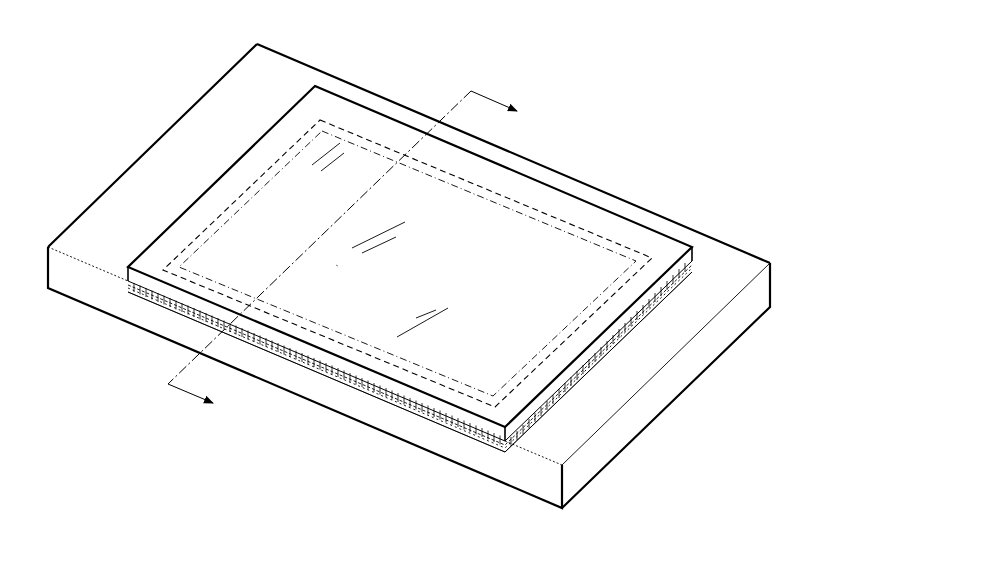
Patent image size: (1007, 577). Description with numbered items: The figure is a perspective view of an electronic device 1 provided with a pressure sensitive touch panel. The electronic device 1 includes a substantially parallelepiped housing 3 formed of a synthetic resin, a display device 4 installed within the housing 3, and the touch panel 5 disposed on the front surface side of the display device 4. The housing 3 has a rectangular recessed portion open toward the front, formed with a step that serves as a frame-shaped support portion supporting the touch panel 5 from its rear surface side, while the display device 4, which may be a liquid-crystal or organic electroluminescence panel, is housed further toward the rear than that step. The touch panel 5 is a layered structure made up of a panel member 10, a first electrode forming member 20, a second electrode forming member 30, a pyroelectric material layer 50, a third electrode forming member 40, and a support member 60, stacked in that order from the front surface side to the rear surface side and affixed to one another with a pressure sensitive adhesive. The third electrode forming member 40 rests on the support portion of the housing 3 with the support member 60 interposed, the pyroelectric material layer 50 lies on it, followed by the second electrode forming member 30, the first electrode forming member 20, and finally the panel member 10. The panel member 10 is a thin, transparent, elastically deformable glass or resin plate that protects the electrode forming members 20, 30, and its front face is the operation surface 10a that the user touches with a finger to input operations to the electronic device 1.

The electronic device 1 is at (118, 110).
The housing 3 is at (286, 65).
The display device 4 is at (597, 233).
The touch panel 5 is at (664, 224).
The panel member 10 is at (700, 250).
The operation surface 10a is at (336, 265).
The first electrode forming member 20 is at (600, 361).
The second electrode forming member 30 is at (410, 355).
The third electrode forming member 40 is at (410, 357).
The pyroelectric material layer 50 is at (410, 358).
The support member 60 is at (540, 420).